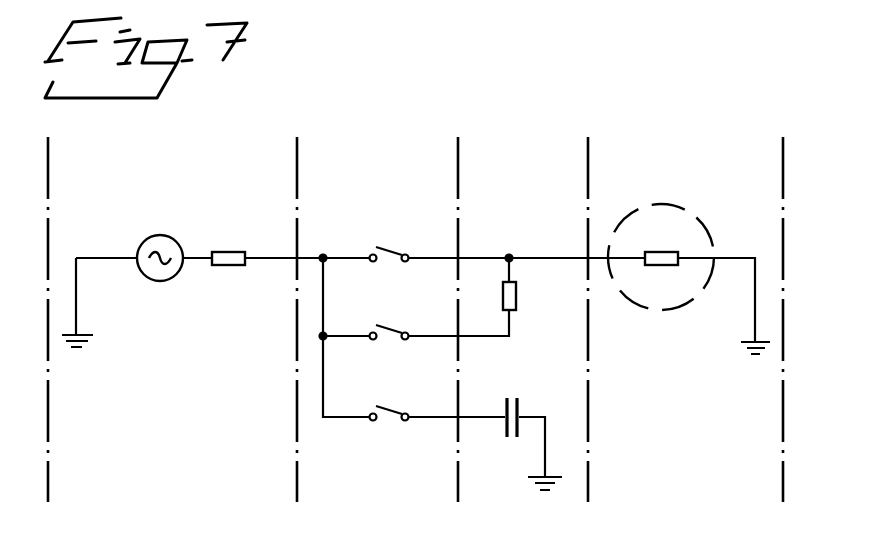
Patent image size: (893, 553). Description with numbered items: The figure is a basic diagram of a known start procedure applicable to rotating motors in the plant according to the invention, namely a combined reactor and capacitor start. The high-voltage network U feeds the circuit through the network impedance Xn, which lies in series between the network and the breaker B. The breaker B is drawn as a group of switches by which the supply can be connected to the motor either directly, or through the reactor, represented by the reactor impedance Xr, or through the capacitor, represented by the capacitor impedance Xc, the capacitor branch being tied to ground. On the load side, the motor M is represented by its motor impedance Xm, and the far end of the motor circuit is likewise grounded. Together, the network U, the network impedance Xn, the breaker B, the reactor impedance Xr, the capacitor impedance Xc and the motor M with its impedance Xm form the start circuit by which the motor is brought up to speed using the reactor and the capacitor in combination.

The high-voltage network U is at (160, 232).
The network impedance Xn is at (224, 237).
The breaker B is at (389, 305).
The reactor impedance Xr is at (527, 293).
The capacitor impedance Xc is at (529, 406).
The motor M is at (661, 237).
The motor impedance Xm is at (654, 238).